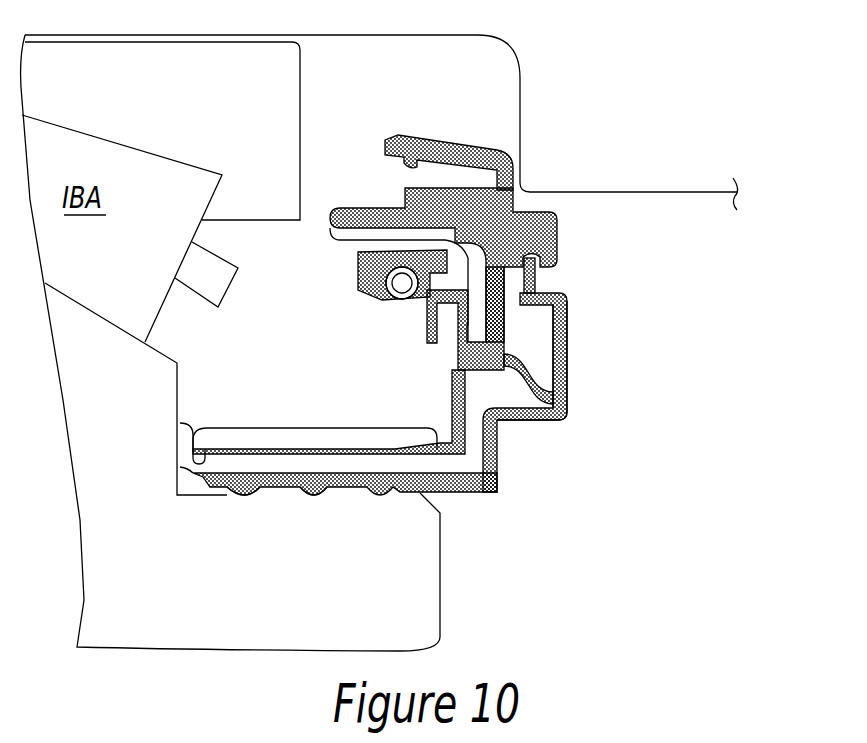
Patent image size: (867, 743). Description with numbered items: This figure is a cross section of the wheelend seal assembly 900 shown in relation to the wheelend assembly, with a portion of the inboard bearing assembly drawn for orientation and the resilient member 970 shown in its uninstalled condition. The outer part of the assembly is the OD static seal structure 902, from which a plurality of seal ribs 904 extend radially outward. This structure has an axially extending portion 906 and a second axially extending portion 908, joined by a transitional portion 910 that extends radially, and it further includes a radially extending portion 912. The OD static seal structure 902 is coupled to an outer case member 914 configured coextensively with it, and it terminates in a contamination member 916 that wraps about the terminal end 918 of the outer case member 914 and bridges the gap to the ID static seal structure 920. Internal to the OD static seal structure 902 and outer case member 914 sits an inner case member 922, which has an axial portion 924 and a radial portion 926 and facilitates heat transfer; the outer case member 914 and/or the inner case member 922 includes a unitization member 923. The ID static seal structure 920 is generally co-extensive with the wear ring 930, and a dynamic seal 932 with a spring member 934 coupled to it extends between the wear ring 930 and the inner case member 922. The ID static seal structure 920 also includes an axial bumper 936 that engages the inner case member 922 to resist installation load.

The wheelend seal assembly 900 is at (713, 110).
The OD static seal structure 902 is at (429, 401).
The seal ribs 904 is at (300, 496).
The axially extending portion 906 is at (242, 496).
The second axially extending portion 908 is at (563, 417).
The transitional portion 910 is at (497, 433).
The radially extending portion 912 is at (567, 380).
The outer case member 914 is at (467, 450).
The contamination member 916 is at (543, 290).
The terminal end 918 is at (543, 327).
The ID static seal structure 920 is at (548, 218).
The inner case member 922 is at (370, 437).
The unitization member 923 is at (180, 440).
The axial portion 924 is at (265, 445).
The radial portion 926 is at (445, 380).
The wear ring 930 is at (296, 142).
The dynamic seal 932 is at (373, 263).
The spring member 934 is at (385, 300).
The axial bumper 936 is at (458, 342).
The resilient member 970 is at (480, 158).